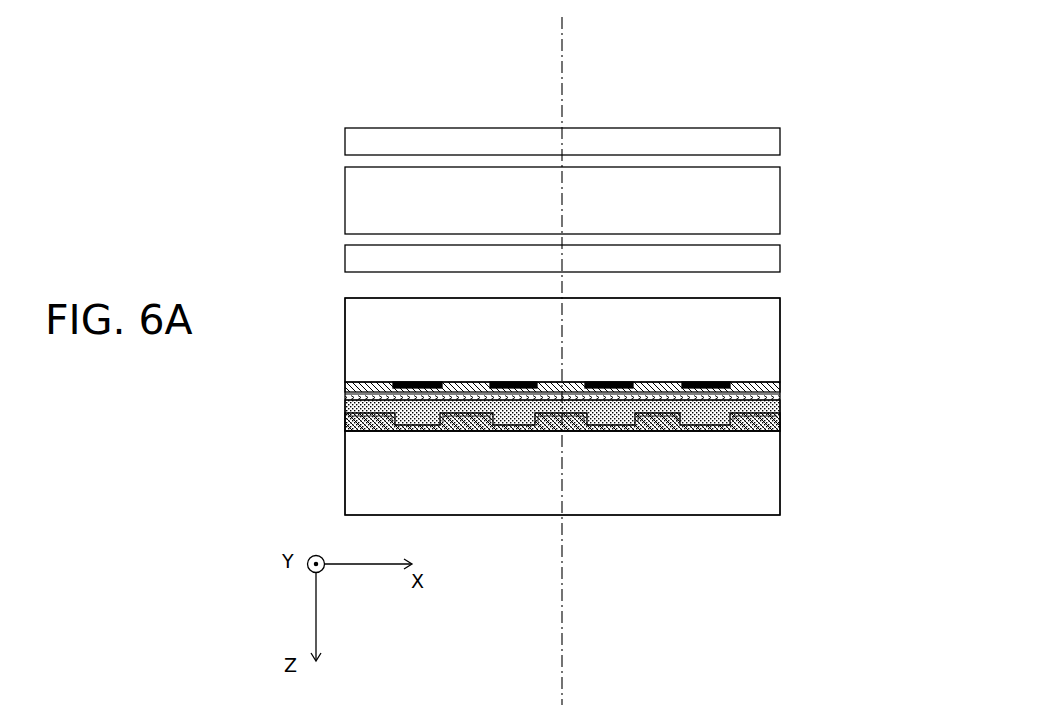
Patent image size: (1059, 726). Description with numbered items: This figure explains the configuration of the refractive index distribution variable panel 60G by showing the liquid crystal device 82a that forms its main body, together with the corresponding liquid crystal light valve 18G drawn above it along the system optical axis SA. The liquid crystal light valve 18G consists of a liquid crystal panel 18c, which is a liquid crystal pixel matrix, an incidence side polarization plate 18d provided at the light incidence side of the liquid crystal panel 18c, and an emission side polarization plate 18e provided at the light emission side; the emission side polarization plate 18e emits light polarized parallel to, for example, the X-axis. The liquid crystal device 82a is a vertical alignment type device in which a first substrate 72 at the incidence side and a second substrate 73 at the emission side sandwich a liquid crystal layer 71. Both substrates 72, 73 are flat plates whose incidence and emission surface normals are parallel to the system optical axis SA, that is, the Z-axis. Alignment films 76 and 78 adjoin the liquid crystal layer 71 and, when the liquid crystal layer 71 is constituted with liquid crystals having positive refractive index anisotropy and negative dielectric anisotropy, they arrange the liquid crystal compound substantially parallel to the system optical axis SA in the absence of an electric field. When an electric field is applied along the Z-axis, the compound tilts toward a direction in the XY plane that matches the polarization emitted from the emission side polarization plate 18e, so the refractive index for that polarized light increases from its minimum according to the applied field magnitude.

The liquid crystal light valve 18G is at (700, 112).
The incidence side polarization plate 18d is at (770, 140).
The liquid crystal panel 18c is at (770, 195).
The emission side polarization plate 18e is at (770, 255).
The refractive index distribution variable panel 60G is at (665, 534).
The first substrate 72 is at (772, 340).
The second substrate 73 is at (772, 480).
The liquid crystal layer 71 is at (780, 402).
The alignment film 76 is at (473, 394).
The alignment film 78 is at (510, 432).
The liquid crystal device 82a is at (332, 300).
The system optical axis SA is at (561, 59).